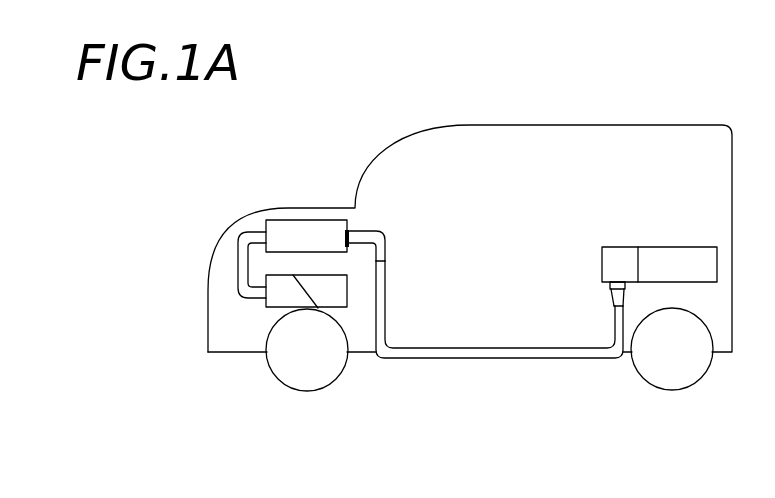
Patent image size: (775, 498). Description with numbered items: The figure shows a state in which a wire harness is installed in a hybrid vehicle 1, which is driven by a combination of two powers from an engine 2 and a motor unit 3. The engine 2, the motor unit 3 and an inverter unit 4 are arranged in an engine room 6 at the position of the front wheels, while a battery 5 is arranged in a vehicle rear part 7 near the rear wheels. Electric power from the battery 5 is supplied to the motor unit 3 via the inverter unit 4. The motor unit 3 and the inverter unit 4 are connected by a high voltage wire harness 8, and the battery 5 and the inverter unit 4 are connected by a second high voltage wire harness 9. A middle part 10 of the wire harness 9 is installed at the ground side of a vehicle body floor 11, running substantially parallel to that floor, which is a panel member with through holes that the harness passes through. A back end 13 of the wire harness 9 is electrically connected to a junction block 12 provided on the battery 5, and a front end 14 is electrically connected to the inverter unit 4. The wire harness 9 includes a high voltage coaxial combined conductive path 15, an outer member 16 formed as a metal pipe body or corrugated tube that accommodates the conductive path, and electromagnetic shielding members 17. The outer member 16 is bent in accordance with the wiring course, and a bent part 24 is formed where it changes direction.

The hybrid vehicle 1 is at (222, 141).
The engine 2 is at (340, 300).
The motor unit 3 is at (273, 300).
The inverter unit 4 is at (289, 233).
The battery 5 is at (664, 250).
The engine room 6 is at (216, 318).
The vehicle rear part 7 is at (725, 338).
The high voltage wire harness 8 is at (238, 246).
The wire harness 9 is at (504, 360).
The middle part 10 is at (445, 360).
The vehicle body floor 11 is at (470, 347).
The junction block 12 is at (612, 250).
The back end 13 is at (610, 285).
The front end 14 is at (345, 208).
The high voltage coaxial combined conductive path 15 is at (578, 360).
The outer member 16 is at (546, 360).
The electromagnetic shielding member 17 is at (387, 235).
The bent part 24 is at (380, 362).